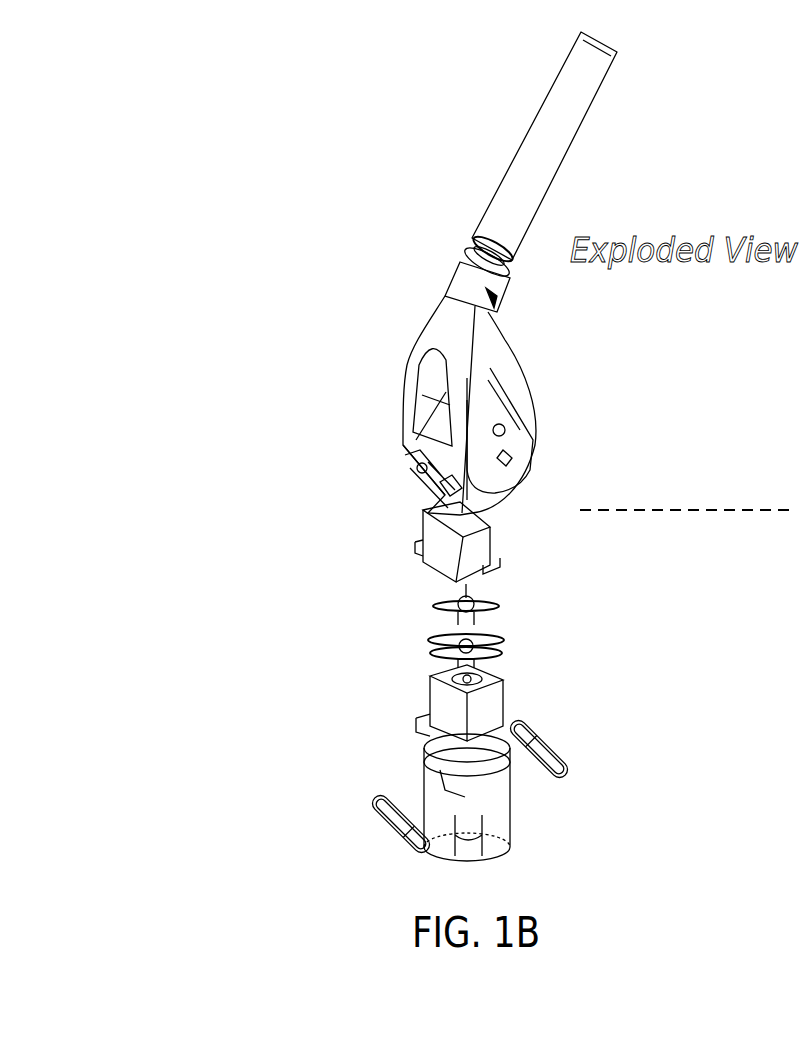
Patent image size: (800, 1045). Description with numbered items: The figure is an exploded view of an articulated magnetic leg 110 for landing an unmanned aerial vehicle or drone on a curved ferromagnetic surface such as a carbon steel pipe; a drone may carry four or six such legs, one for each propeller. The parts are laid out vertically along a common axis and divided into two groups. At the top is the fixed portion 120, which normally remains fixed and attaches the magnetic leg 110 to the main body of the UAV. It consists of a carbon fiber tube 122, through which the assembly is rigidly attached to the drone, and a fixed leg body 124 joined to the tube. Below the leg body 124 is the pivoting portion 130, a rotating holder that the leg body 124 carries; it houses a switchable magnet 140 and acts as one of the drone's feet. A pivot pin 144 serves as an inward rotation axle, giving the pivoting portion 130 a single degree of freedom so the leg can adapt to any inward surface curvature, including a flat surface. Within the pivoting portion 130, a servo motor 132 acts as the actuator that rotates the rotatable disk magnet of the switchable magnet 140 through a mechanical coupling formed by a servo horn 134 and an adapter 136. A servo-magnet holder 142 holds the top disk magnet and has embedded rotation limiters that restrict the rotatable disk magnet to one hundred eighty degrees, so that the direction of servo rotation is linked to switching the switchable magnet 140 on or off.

The articulated magnetic leg 110 is at (166, 382).
The fixed portion 120 is at (683, 340).
The carbon fiber tube 122 is at (416, 156).
The leg body 124 is at (383, 388).
The pivoting portion 130 is at (683, 708).
The servo motor 132 is at (352, 509).
The servo horn 134 is at (349, 563).
The adapter 136 is at (373, 614).
The switchable magnet 140 is at (307, 682).
The servo-magnet holder 142 is at (315, 774).
The pivot pin 144 is at (390, 786).